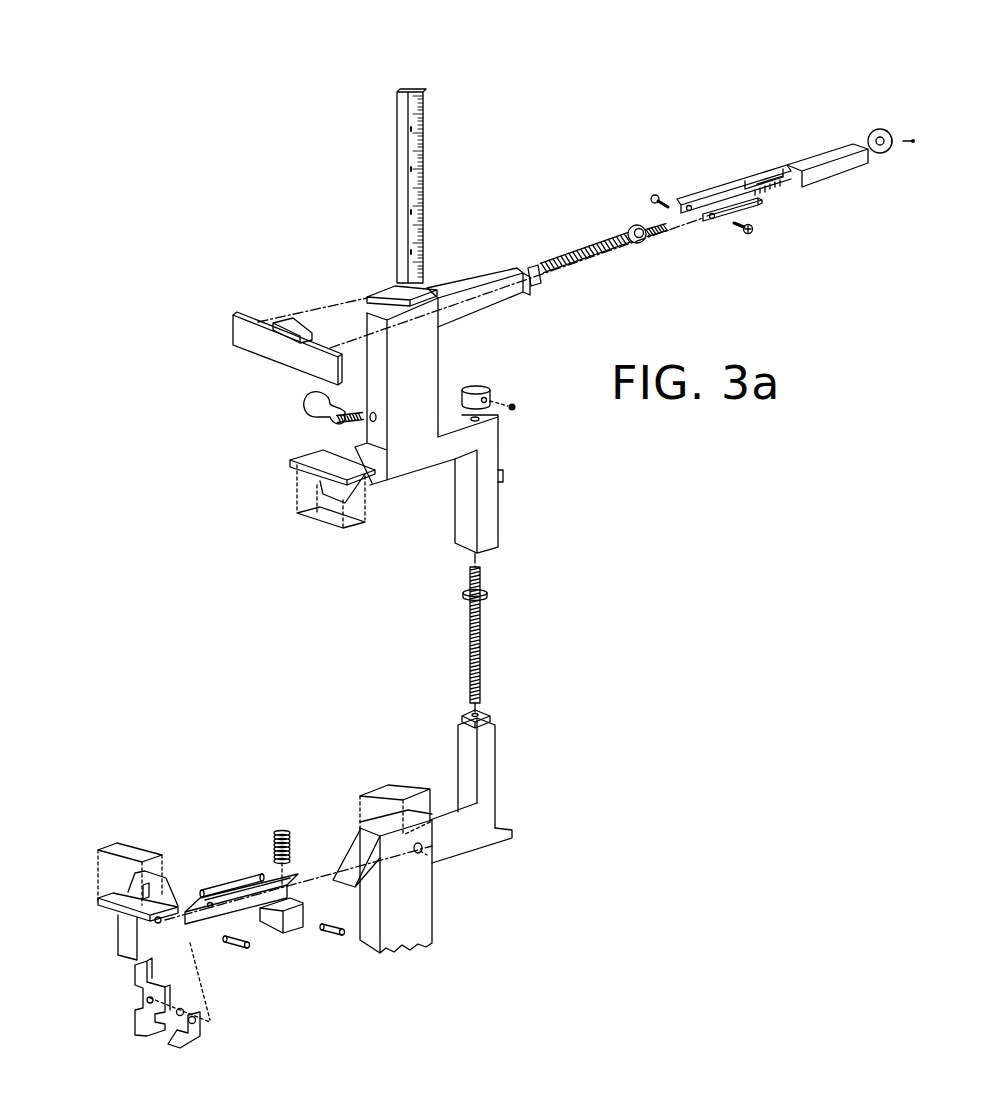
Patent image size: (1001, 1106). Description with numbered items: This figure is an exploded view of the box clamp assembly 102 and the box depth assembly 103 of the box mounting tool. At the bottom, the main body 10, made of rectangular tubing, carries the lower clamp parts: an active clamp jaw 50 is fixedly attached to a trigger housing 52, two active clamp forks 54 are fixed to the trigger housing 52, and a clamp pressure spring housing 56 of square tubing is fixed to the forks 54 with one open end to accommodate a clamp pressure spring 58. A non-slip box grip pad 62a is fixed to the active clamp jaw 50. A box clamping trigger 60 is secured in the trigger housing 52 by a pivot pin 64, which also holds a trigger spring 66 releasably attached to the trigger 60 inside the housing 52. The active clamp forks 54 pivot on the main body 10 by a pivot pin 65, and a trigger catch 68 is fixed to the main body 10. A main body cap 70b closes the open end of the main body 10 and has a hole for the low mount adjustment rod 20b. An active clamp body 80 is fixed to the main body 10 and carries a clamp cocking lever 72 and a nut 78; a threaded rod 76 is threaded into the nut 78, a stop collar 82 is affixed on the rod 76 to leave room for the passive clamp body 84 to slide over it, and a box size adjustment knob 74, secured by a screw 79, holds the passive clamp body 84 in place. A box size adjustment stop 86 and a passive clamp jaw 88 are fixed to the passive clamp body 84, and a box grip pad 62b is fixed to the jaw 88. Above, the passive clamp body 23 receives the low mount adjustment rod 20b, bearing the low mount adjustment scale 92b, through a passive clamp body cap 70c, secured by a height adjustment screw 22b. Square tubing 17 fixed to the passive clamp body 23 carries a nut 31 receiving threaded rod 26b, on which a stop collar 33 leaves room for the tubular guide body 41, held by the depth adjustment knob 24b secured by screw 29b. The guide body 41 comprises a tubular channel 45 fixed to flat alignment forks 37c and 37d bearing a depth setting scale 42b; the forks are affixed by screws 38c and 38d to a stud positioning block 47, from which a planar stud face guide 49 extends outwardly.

The box depth assembly 103 is at (611, 114).
The low mount adjustment rod 20b is at (399, 160).
The low mount adjustment scale 92b is at (412, 190).
The passive clamp body cap 70c is at (380, 292).
The square tubing 17 is at (476, 285).
The nut 31 is at (538, 272).
The threaded rod 26b is at (586, 245).
The stop collar 33 is at (644, 240).
The screw 38d is at (655, 195).
The alignment fork 37c is at (733, 188).
The tubular guide body 41 is at (786, 138).
The depth adjustment knob 24b is at (889, 128).
The screw 29b is at (918, 139).
The tubular channel 45 is at (834, 171).
The depth setting scale 42b is at (777, 195).
The alignment fork 37d is at (726, 214).
The screw 38c is at (755, 232).
The stud positioning block 47 is at (290, 322).
The stud face guide 49 is at (245, 340).
The passive clamp body 23 is at (417, 355).
The height adjustment screw 22b is at (318, 405).
The box size adjustment knob 74 is at (478, 388).
The screw 79 is at (517, 405).
The passive clamp body 84 is at (487, 437).
The box size adjustment stop 86 is at (504, 475).
The passive clamp jaw 88 is at (322, 483).
The box grip pad 62b is at (322, 520).
The box clamp assembly 102 is at (594, 540).
The stop collar 82 is at (480, 591).
The threaded rod 76 is at (481, 638).
The nut 78 is at (482, 712).
The active clamp body 80 is at (492, 765).
The clamp cocking lever 72 is at (508, 830).
The main body cap 70b is at (379, 795).
The main body 10 is at (430, 920).
The trigger catch 68 is at (348, 860).
The clamp pressure spring 58 is at (276, 828).
The box grip pad 62a is at (141, 845).
The active clamp jaw 50 is at (118, 892).
The active clamp forks 54 is at (260, 896).
The trigger housing 52 is at (130, 942).
The pivot pin 64 is at (237, 946).
The clamp pressure spring housing 56 is at (294, 925).
The pivot pin 65 is at (336, 936).
The box clamping trigger 60 is at (143, 1010).
The trigger spring 66 is at (192, 1032).